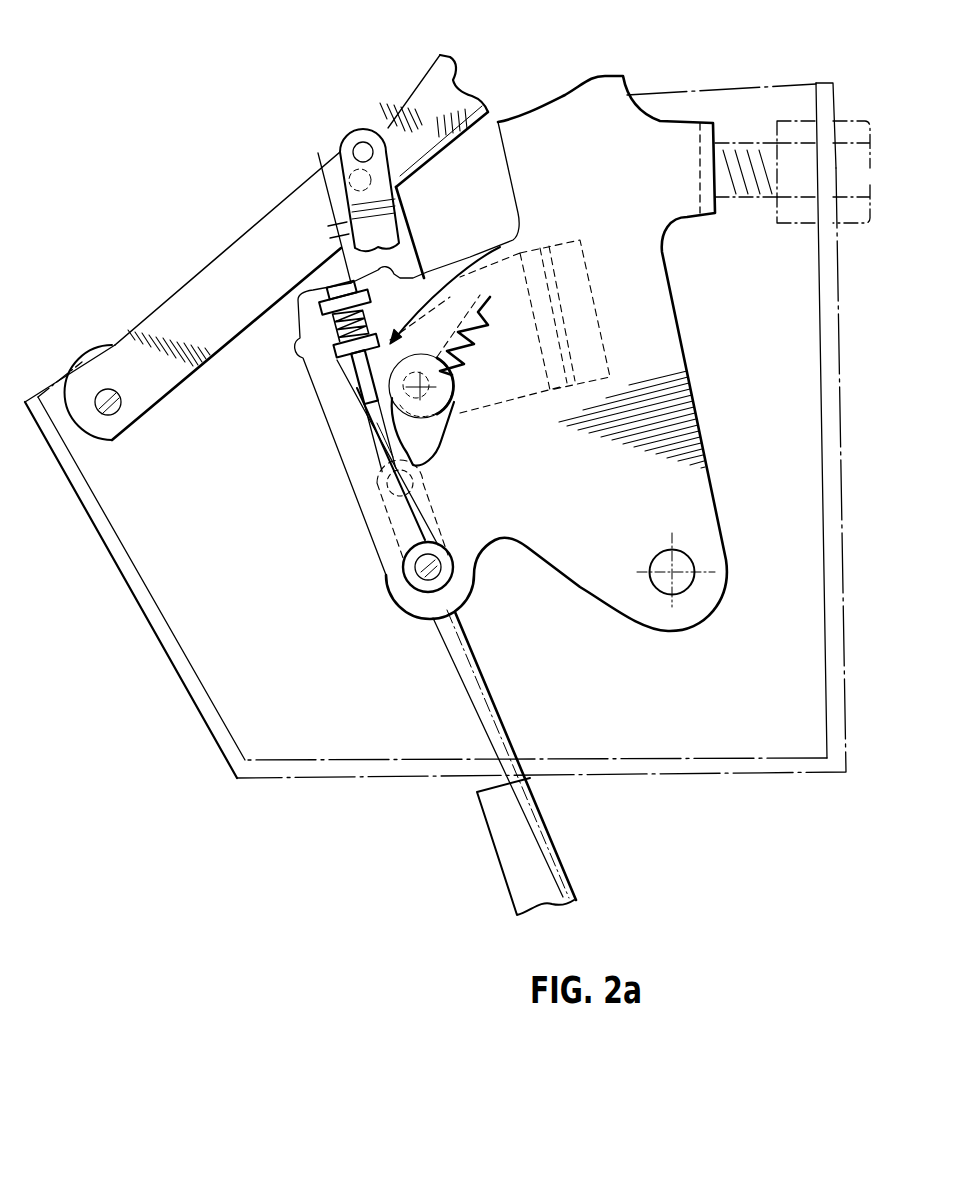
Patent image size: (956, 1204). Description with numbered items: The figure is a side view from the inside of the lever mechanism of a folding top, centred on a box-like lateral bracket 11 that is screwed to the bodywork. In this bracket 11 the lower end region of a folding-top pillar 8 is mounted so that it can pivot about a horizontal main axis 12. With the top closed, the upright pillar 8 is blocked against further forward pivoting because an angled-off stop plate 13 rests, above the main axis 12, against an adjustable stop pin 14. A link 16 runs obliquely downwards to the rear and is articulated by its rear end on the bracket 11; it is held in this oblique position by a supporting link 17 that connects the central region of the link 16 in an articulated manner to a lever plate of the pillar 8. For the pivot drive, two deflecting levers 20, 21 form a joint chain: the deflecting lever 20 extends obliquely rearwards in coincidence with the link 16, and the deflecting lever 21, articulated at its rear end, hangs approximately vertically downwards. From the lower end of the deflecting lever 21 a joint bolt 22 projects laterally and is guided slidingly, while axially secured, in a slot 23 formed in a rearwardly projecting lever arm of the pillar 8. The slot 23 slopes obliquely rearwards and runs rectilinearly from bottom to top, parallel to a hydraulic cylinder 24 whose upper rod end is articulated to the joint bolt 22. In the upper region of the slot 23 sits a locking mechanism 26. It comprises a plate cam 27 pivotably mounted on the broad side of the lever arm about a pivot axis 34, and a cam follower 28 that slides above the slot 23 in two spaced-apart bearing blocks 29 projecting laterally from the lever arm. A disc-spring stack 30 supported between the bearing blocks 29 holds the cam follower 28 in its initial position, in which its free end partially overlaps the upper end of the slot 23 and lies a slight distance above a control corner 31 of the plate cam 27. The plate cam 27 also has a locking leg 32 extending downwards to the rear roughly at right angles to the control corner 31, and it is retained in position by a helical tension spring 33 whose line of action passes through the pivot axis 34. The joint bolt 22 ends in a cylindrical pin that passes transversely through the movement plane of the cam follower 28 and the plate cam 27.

The folding-top pillar 8 is at (566, 72).
The bracket 11 is at (822, 328).
The main axis 12 is at (672, 572).
The stop plate 13 is at (723, 216).
The stop pin 14 is at (747, 203).
The link 16 is at (200, 292).
The supporting link 17 is at (323, 172).
The deflecting lever 20 is at (410, 102).
The deflecting lever 21 is at (410, 184).
The joint bolt 22 is at (377, 527).
The slot 23 is at (348, 478).
The hydraulic cylinder 24 is at (563, 842).
The locking mechanism 26 is at (450, 278).
The plate cam 27 is at (436, 438).
The cam follower 28 is at (363, 380).
The bearing block 29 is at (330, 342).
The disc-spring stack 30 is at (419, 274).
The control corner 31 is at (352, 426).
The locking leg 32 is at (432, 476).
The helical tension spring 33 is at (473, 340).
The pivot axis 34 is at (436, 388).